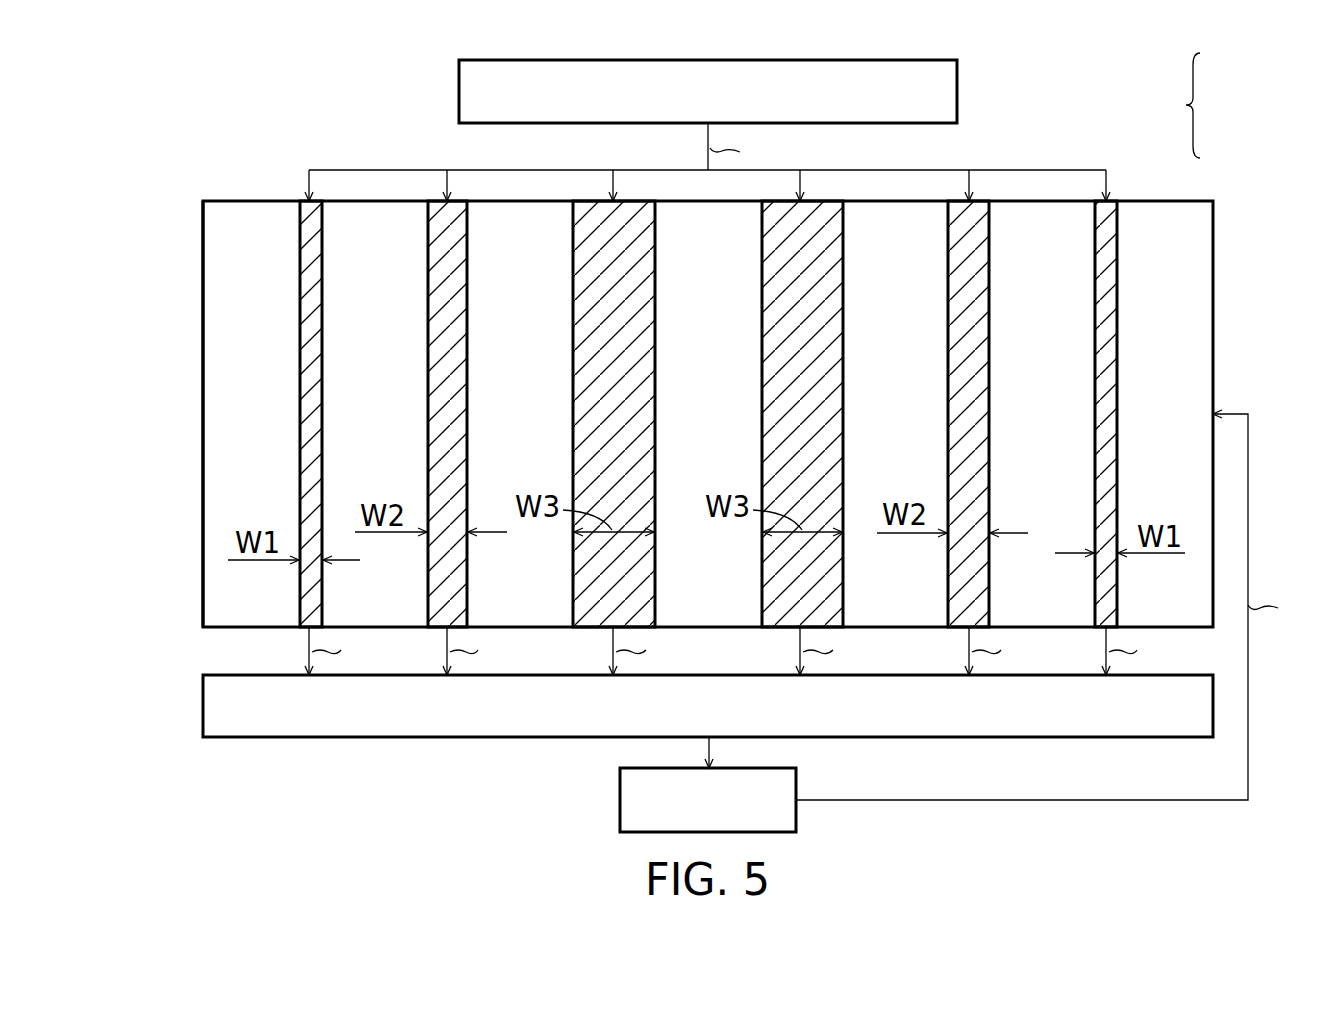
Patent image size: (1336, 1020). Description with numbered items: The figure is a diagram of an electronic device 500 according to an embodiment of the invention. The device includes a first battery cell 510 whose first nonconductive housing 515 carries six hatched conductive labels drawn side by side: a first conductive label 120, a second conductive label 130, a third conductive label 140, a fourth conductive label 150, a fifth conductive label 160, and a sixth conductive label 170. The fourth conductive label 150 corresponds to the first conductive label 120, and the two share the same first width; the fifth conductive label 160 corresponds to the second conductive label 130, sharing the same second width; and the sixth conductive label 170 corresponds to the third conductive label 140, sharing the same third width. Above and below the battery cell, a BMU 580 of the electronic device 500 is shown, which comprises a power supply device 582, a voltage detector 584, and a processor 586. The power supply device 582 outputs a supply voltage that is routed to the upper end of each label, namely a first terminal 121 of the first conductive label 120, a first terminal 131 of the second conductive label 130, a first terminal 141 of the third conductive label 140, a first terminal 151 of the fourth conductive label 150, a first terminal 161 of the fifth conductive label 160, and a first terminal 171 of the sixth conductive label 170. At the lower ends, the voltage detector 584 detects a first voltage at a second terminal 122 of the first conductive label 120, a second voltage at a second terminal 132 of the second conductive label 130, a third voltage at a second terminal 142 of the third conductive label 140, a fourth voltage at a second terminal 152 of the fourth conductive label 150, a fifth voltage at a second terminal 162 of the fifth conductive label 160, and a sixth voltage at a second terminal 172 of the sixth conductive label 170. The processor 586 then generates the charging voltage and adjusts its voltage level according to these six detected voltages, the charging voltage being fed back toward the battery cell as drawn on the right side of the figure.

The electronic device 500 is at (125, 82).
The first battery cell 510 is at (195, 292).
The first nonconductive housing 515 is at (203, 417).
The first conductive label 120 is at (312, 425).
The first terminal of the first conductive label 121 is at (311, 207).
The second terminal of the first conductive label 122 is at (311, 624).
The second conductive label 130 is at (458, 377).
The first terminal of the second conductive label 131 is at (440, 207).
The second terminal of the second conductive label 132 is at (440, 624).
The third conductive label 140 is at (583, 420).
The first terminal of the third conductive label 141 is at (585, 207).
The second terminal of the third conductive label 142 is at (585, 624).
The fourth conductive label 150 is at (1104, 407).
The first terminal of the fourth conductive label 151 is at (1106, 207).
The second terminal of the fourth conductive label 152 is at (1106, 624).
The fifth conductive label 160 is at (958, 418).
The first terminal of the fifth conductive label 161 is at (960, 207).
The second terminal of the fifth conductive label 162 is at (960, 624).
The sixth conductive label 170 is at (772, 406).
The first terminal of the sixth conductive label 171 is at (774, 207).
The second terminal of the sixth conductive label 172 is at (774, 624).
The BMU 580 is at (1192, 106).
The power supply device 582 is at (459, 94).
The voltage detector 584 is at (203, 707).
The processor 586 is at (620, 800).